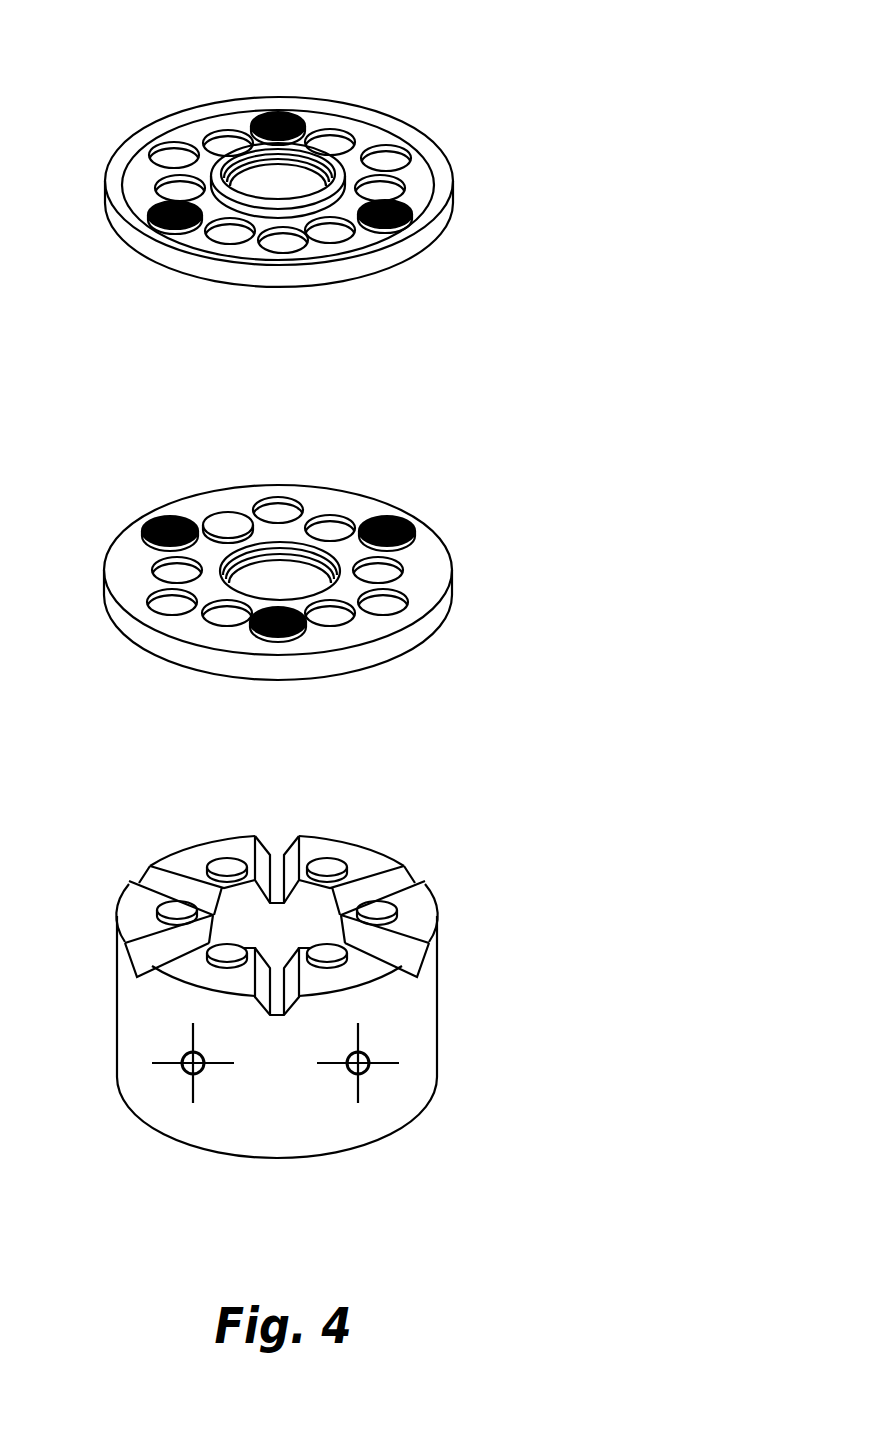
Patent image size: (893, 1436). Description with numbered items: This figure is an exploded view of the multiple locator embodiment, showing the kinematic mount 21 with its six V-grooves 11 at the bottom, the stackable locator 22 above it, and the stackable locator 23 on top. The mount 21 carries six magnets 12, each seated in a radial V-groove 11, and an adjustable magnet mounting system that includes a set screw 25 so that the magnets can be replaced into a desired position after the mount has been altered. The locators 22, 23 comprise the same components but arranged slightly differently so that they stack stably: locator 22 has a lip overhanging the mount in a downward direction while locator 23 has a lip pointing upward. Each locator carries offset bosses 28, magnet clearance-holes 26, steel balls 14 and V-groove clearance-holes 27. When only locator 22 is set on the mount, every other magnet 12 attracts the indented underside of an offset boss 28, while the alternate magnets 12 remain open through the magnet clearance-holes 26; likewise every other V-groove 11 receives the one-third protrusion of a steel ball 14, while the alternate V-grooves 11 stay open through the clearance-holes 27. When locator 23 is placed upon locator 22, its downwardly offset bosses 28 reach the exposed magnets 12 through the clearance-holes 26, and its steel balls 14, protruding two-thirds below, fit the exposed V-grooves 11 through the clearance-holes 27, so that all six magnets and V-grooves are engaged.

The V-groove 11 is at (288, 863).
The magnet 12 is at (377, 905).
The steel ball 14 is at (282, 118).
The kinematic mount 21 is at (417, 1000).
The stackable locator 22 is at (423, 570).
The stackable locator 23 is at (420, 192).
The set screw 25 is at (370, 1070).
The magnet clearance-hole 26 is at (380, 192).
The V-groove clearance-hole 27 is at (385, 158).
The offset boss 28 is at (330, 143).